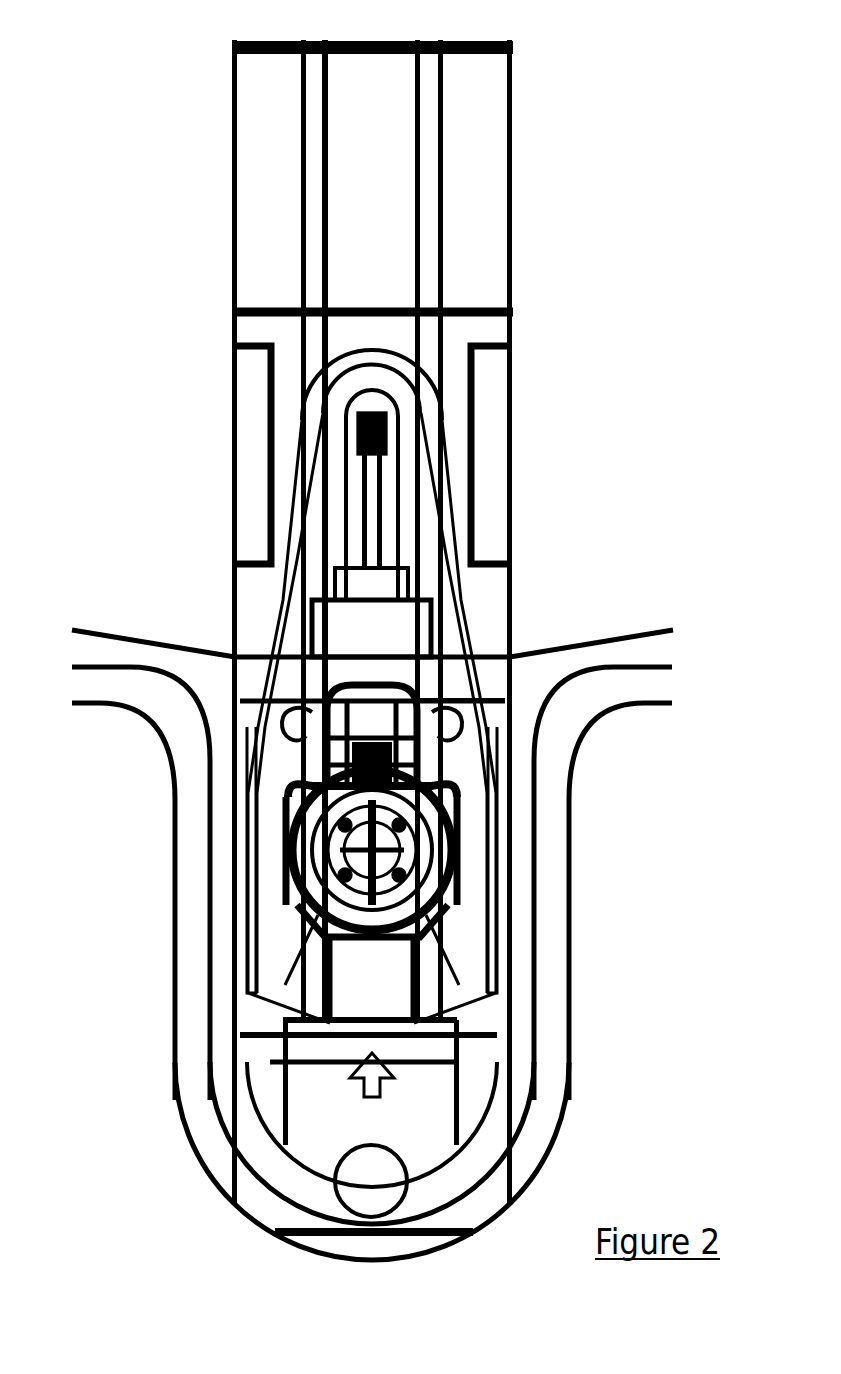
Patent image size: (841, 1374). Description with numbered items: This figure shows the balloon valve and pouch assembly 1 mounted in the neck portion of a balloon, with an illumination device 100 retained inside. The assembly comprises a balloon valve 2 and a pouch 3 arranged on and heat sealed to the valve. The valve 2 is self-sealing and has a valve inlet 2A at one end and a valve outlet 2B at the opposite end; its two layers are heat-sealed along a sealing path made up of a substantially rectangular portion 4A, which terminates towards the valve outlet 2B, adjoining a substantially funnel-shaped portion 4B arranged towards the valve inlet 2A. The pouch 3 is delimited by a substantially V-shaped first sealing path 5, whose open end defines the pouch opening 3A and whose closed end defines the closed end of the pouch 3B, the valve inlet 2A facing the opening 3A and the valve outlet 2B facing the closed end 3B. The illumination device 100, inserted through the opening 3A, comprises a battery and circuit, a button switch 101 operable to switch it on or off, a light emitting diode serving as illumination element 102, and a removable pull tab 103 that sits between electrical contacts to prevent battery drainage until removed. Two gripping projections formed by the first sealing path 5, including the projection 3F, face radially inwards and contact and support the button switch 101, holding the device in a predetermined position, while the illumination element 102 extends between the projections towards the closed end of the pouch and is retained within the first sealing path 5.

The balloon valve and pouch assembly 1 is at (128, 70).
The balloon valve 2 is at (352, 230).
The valve inlet 2A is at (380, 1047).
The valve outlet 2B is at (372, 45).
The pouch 3 is at (272, 820).
The pouch opening 3A is at (378, 985).
The closed end of the pouch 3B is at (372, 355).
The gripping projection 3F is at (457, 718).
The rectangular portion of the second sealing path 4A is at (312, 290).
The funnel-shaped portion of the second sealing path 4B is at (290, 975).
The first sealing path 5 is at (290, 583).
The illumination device 100 is at (462, 812).
The button switch 101 is at (372, 857).
The illumination element 102 is at (389, 440).
The pull tab 103 is at (337, 1085).